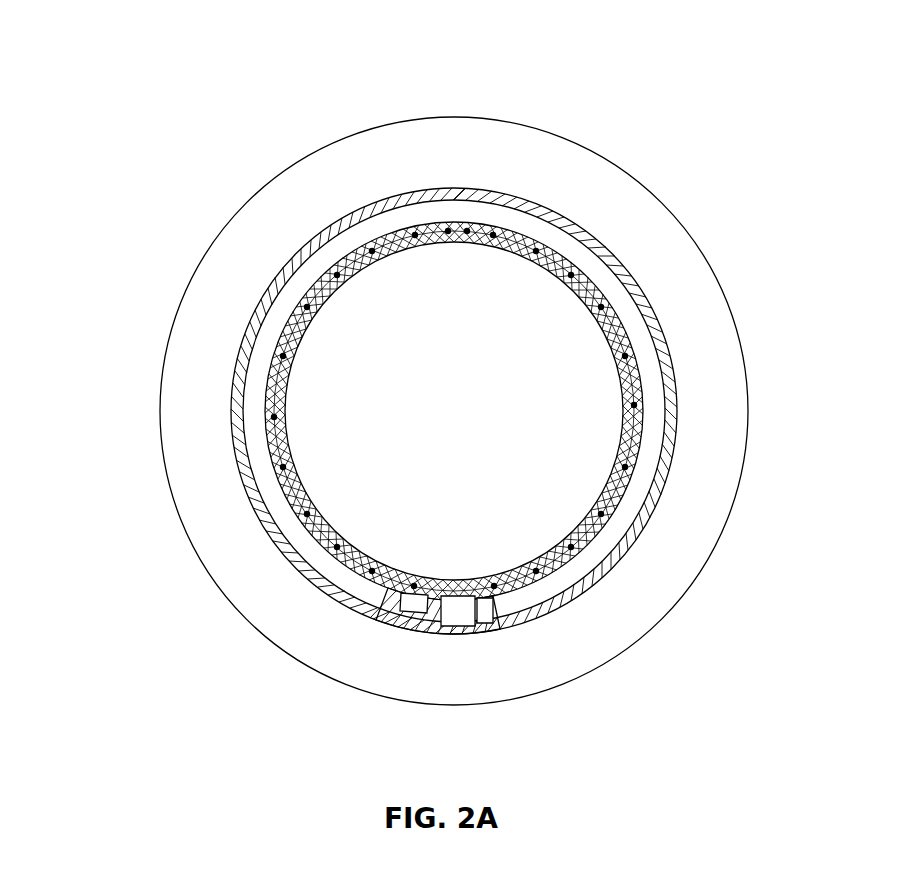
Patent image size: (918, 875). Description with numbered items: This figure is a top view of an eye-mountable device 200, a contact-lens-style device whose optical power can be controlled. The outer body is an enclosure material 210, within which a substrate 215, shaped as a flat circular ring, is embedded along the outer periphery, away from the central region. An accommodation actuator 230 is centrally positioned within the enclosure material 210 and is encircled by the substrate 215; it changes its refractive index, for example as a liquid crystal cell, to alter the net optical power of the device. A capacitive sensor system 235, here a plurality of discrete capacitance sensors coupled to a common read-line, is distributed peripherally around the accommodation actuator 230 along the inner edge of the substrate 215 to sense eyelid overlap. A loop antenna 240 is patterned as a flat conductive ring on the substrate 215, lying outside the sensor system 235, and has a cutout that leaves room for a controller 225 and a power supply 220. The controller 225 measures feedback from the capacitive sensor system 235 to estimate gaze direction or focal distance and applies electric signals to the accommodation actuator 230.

The eye-mountable device 200 is at (430, 406).
The enclosure material 210 is at (203, 569).
The substrate 215 is at (627, 550).
The power supply 220 is at (407, 602).
The controller 225 is at (457, 617).
The accommodation actuator 230 is at (417, 373).
The capacitive sensor system 235 is at (272, 390).
The loop antenna 240 is at (570, 580).